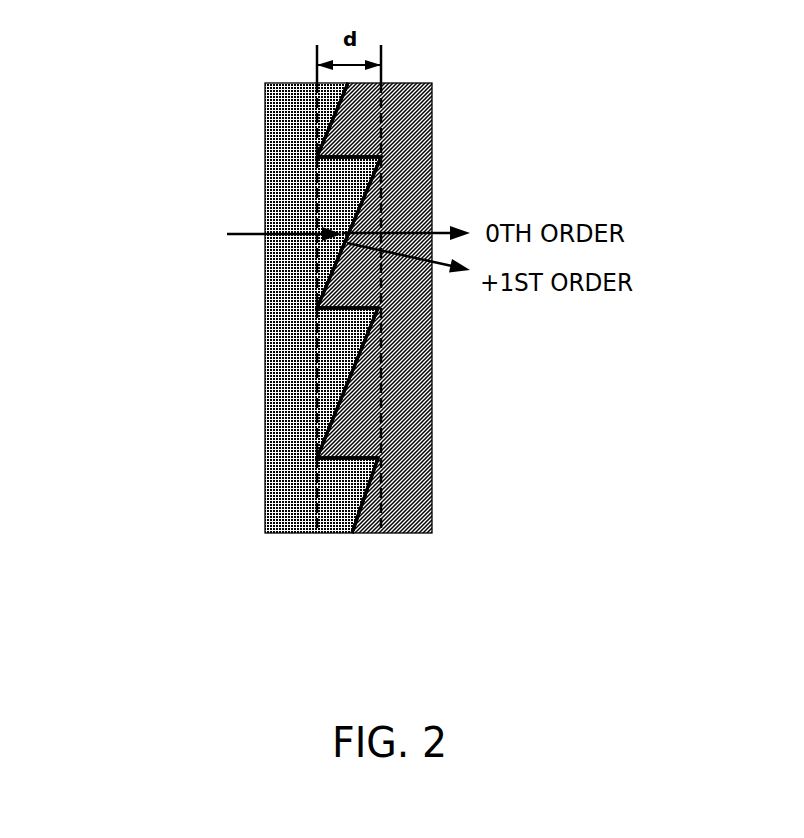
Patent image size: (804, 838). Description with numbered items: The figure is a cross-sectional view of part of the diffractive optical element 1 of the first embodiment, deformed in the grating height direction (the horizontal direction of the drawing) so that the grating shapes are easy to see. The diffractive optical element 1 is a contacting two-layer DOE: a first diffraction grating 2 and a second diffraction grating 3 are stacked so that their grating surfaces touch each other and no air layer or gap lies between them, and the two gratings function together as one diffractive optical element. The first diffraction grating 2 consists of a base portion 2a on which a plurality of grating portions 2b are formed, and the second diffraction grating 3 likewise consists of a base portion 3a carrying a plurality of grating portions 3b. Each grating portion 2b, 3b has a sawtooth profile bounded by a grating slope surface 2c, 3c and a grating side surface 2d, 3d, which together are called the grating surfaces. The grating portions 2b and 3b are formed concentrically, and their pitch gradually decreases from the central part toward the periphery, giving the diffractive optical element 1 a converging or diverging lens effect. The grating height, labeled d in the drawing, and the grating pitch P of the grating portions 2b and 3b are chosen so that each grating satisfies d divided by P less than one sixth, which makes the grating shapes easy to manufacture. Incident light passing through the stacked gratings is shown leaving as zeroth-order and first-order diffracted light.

The diffractive optical element 1 is at (380, 603).
The first diffraction grating 2 is at (292, 483).
The second diffraction grating 3 is at (407, 483).
The base portion 2a is at (293, 397).
The grating portion 2b is at (340, 347).
The grating slope surface 2c is at (363, 367).
The grating side surface 2d is at (355, 463).
The base portion 3a is at (407, 433).
The grating portion 3b is at (360, 397).
The grating slope surface 3c is at (443, 308).
The grating side surface 3d is at (441, 318).